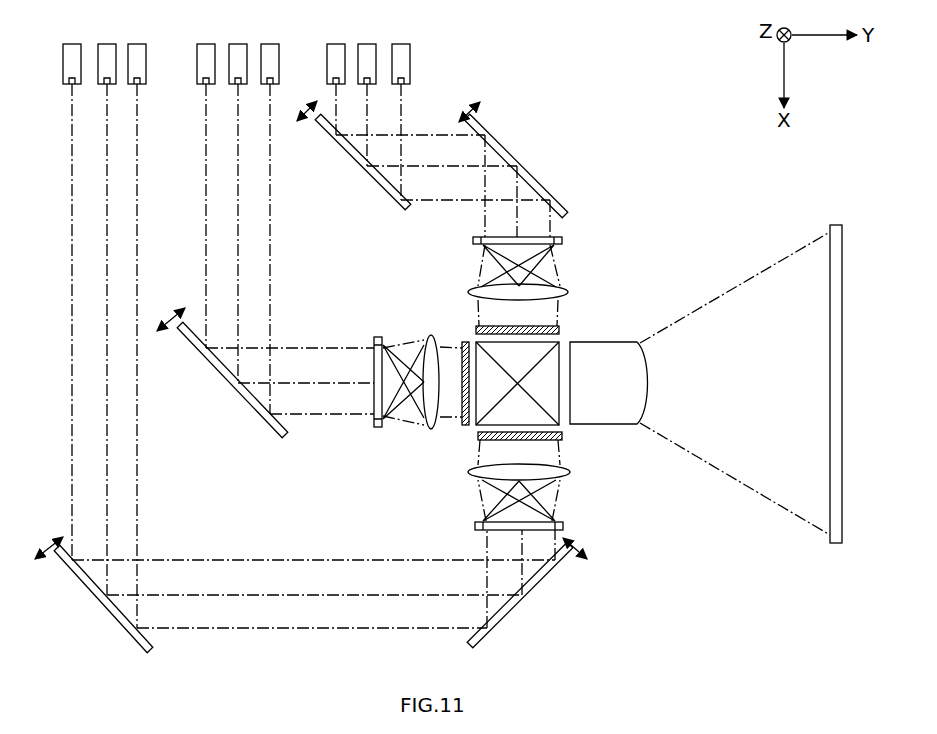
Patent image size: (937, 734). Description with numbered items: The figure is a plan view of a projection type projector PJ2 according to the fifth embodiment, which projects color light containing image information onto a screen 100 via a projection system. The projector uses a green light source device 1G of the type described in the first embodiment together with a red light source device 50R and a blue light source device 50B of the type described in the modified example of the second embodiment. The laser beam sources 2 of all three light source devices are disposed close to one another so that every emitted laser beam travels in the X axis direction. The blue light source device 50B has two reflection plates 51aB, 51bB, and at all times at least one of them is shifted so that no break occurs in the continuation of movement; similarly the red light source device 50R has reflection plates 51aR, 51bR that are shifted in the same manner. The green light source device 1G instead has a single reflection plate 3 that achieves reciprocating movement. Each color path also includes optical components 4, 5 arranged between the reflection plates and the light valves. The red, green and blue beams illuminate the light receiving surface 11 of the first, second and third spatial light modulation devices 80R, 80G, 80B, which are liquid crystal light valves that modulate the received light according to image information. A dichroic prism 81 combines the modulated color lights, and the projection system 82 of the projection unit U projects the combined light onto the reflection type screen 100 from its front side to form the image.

The laser beam source 2 is at (75, 44).
The reflection plate 3 is at (262, 418).
The lens array 4 is at (563, 241).
The condenser lens 5 is at (566, 291).
The light receiving surface 11 is at (560, 330).
The green light source device 1G is at (304, 335).
The blue light source device 50B is at (433, 111).
The red light source device 50R is at (294, 556).
The reflection plate 51aB is at (384, 205).
The reflection plate 51bB is at (552, 193).
The reflection plate 51aR is at (124, 633).
The reflection plate 51bR is at (503, 617).
The third spatial light modulation device 80B is at (476, 327).
The second spatial light modulation device 80G is at (463, 342).
The first spatial light modulation device 80R is at (562, 437).
The dichroic prism 81 is at (560, 343).
The projection system 82 is at (640, 342).
The projection unit U is at (719, 229).
The screen 100 is at (843, 282).
The projection type projector PJ2 is at (664, 69).